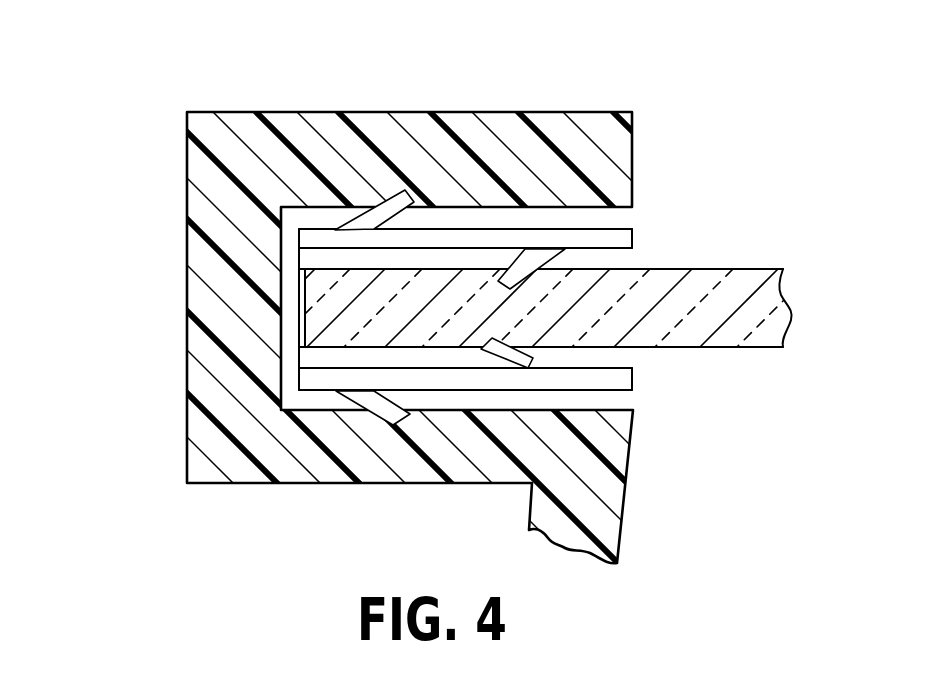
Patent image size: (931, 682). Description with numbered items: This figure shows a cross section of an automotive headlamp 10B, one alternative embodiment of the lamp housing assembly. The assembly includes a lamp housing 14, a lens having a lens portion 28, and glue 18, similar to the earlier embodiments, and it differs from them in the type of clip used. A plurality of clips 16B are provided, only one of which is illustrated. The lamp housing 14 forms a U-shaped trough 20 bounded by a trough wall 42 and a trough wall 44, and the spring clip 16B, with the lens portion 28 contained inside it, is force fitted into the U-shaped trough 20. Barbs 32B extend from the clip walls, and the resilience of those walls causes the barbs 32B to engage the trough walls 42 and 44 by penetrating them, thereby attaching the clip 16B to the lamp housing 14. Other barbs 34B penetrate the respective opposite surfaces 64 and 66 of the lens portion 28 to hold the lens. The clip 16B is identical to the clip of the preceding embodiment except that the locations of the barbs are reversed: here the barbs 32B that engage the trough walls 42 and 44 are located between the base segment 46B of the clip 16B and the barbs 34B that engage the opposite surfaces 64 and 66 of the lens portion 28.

The automotive headlamp 10B is at (130, 147).
The lamp housing 14 is at (316, 58).
The clip 16B is at (513, 306).
The glue 18 is at (598, 259).
The U-shaped trough 20 is at (289, 398).
The lens portion 28 is at (555, 306).
The barbs 32B is at (386, 198).
The barbs 34B is at (510, 258).
The trough wall 42 is at (612, 216).
The trough wall 44 is at (607, 407).
The base segment 46B is at (300, 328).
The surface of the lens portion 64 is at (760, 270).
The surface of the lens portion 66 is at (757, 347).